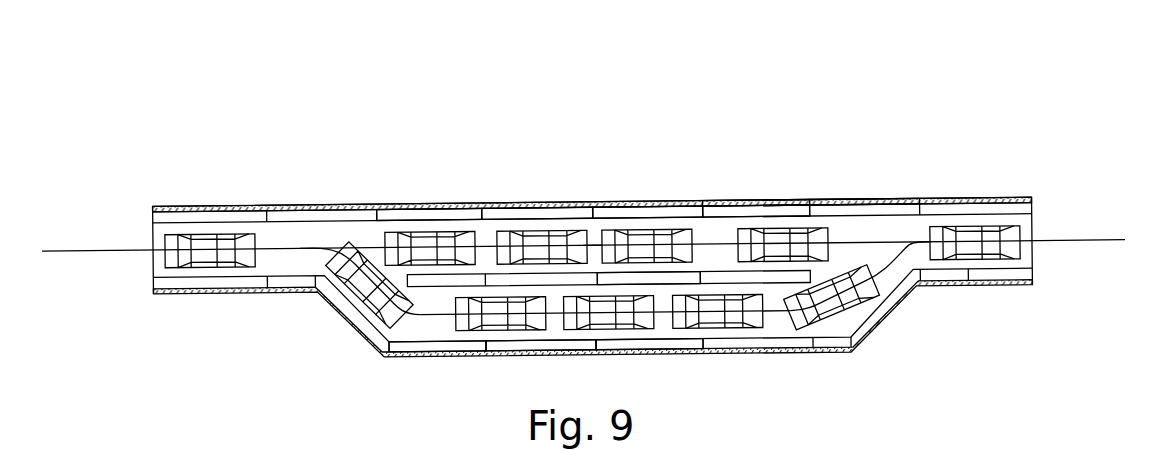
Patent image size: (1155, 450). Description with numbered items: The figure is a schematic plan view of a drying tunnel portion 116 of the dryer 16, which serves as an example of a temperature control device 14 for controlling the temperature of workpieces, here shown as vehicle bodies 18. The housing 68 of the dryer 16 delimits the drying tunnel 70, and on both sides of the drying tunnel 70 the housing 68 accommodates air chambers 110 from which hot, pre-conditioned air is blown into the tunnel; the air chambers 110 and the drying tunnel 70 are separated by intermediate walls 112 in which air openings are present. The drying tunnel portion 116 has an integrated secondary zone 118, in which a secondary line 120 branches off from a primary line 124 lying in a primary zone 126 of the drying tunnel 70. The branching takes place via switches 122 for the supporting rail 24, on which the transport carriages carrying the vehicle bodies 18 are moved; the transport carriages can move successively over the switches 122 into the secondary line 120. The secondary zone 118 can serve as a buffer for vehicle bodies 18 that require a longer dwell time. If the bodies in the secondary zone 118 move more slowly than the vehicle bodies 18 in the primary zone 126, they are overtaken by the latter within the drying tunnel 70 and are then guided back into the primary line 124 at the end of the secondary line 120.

The temperature control device 14 is at (758, 153).
The dryer 16 is at (813, 157).
The vehicle body 18 is at (818, 240).
The supporting rail 24 is at (57, 250).
The housing 68 is at (397, 207).
The drying tunnel 70 is at (327, 243).
The air chamber 110 is at (535, 215).
The intermediate wall 112 is at (465, 215).
The drying tunnel portion 116 is at (262, 145).
The secondary zone 118 is at (433, 323).
The secondary line 120 is at (550, 313).
The switch 122 is at (318, 255).
The primary line 124 is at (595, 245).
The primary zone 126 is at (712, 230).